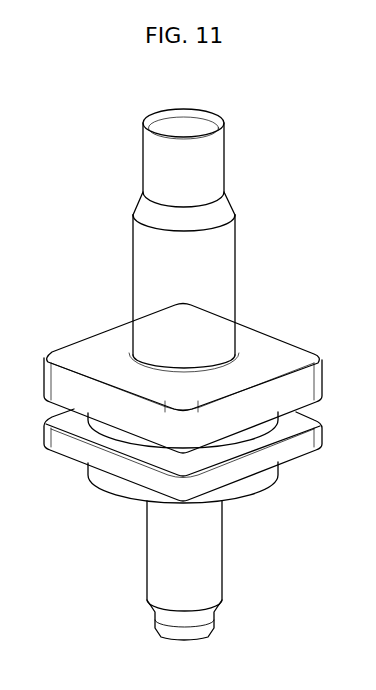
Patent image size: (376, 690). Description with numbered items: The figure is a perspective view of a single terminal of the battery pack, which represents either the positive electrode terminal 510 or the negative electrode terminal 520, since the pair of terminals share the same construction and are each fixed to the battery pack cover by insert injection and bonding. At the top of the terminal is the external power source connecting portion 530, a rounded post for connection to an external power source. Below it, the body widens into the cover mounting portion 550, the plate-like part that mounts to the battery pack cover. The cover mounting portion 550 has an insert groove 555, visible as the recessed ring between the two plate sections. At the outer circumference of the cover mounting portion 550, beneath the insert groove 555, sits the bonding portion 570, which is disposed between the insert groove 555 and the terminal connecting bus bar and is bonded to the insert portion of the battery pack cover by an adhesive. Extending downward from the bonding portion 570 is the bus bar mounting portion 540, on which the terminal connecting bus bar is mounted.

The positive electrode terminal 510 is at (64, 146).
The negative electrode terminal 520 is at (184, 293).
The external power source connecting portion 530 is at (215, 163).
The bus bar mounting portion 540 is at (213, 577).
The cover mounting portion 550 is at (278, 350).
The insert groove 555 is at (270, 430).
The bonding portion 570 is at (250, 488).